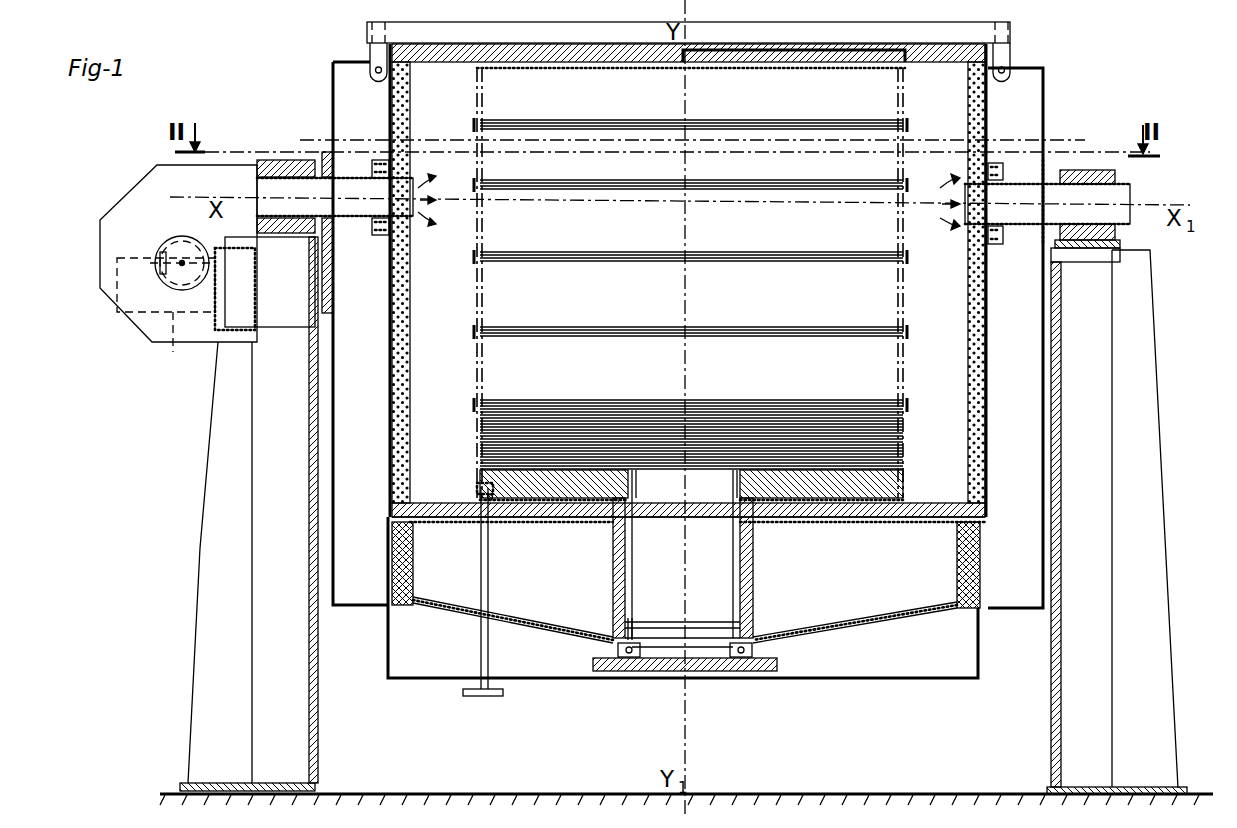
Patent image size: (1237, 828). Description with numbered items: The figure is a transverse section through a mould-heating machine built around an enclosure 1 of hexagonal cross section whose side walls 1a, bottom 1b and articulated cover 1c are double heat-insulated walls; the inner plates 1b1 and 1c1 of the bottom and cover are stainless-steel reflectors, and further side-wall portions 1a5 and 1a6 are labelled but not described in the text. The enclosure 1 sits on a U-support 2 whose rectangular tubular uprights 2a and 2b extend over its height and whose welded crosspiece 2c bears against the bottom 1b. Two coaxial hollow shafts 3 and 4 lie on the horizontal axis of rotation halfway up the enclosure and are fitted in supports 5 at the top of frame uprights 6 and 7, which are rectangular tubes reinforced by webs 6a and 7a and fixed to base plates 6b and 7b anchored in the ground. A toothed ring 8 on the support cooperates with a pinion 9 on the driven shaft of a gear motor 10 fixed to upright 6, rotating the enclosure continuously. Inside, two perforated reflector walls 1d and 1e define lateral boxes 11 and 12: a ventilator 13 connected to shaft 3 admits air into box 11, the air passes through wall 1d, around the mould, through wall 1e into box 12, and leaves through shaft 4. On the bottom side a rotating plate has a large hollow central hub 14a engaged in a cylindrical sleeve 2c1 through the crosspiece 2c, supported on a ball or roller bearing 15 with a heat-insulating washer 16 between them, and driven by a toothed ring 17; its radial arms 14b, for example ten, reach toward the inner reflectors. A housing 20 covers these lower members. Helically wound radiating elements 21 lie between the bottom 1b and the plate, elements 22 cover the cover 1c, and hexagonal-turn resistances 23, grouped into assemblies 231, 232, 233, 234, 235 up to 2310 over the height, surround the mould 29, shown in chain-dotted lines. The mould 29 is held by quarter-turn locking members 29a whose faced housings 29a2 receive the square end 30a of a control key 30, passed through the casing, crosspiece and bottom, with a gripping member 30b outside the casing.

The enclosure 1 is at (1000, 137).
The side walls 1a is at (392, 278).
The drum wall portion 1a5 is at (465, 277).
The drum wall portion 1a6 is at (947, 272).
The bottom 1b is at (935, 512).
The inner plate of the bottom 1b1 is at (917, 500).
The cover 1c is at (930, 58).
The inner plate of the cover 1c1 is at (955, 62).
The wall 1d is at (477, 257).
The wall 1e is at (905, 200).
The U-support 2 is at (333, 100).
The lateral tubular upright 2a is at (366, 113).
The lateral tubular upright 2b is at (1015, 116).
The crosspiece 2c is at (896, 608).
The cylindrical sleeve 2c1 is at (754, 574).
The hollow shaft 3 is at (260, 192).
The hollow shaft 4 is at (1080, 194).
The supports 5 is at (280, 162).
The upright 6 is at (290, 423).
The web 6a is at (252, 495).
The base plate 6b is at (190, 783).
The upright 7 is at (1090, 498).
The web 7a is at (1116, 442).
The base plate 7b is at (1140, 787).
The toothed ring 8 is at (322, 162).
The pinion 9 is at (312, 306).
The gear motor 10 is at (178, 266).
The box 11 is at (448, 353).
The box 12 is at (943, 353).
The ventilator 13 is at (176, 272).
The central hub 14a is at (668, 470).
The radial arms 14b is at (628, 490).
The ball or roller bearing 15 is at (752, 654).
The washer 16 is at (632, 640).
The ring 17 is at (642, 668).
The housing 20 is at (838, 678).
The radiating elements 21 is at (560, 510).
The radiating elements 22 is at (555, 72).
The radiating elements 23 is at (800, 140).
The assembly of resistances 231 is at (858, 451).
The assembly of resistances 232 is at (856, 380).
The assembly of resistances 233 is at (862, 306).
The assembly of resistances 234 is at (862, 236).
The assembly of resistances 235 is at (862, 180).
The assembly of resistances 2310 is at (897, 98).
The mould 29 is at (482, 310).
The locking members 29a is at (480, 487).
The housing 29a2 is at (466, 510).
The control key 30 is at (490, 588).
The end of the key 30a is at (500, 510).
The gripping member 30b is at (472, 697).